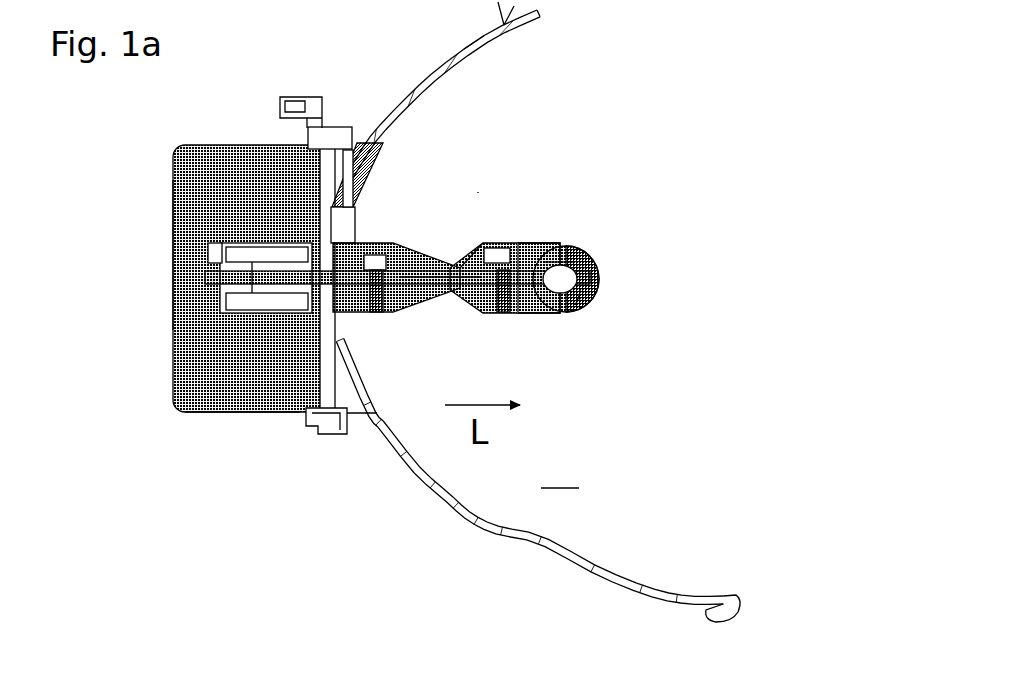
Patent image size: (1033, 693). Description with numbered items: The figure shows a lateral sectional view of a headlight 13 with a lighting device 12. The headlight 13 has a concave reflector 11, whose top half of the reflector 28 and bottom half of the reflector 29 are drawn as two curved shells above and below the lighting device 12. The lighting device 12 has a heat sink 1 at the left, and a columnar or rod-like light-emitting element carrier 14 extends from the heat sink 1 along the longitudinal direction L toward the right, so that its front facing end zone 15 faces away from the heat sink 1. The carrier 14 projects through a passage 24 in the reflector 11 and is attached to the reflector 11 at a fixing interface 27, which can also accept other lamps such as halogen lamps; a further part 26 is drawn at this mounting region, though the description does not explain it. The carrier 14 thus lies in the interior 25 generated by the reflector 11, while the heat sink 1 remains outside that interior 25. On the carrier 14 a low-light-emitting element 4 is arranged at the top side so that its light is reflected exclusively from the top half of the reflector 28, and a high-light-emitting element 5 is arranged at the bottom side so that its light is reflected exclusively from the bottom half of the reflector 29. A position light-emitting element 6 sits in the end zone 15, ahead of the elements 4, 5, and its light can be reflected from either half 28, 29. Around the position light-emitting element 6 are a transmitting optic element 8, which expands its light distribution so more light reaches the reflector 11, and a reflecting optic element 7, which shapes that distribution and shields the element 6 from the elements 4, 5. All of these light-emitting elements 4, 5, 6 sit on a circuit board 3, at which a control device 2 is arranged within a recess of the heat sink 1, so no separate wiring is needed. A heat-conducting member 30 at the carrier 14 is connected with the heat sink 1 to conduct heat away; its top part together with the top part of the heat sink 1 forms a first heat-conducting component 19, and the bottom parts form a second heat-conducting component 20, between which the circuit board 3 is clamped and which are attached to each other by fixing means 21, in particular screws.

The heat sink 1 is at (197, 150).
The control device 2 is at (232, 303).
The circuit board 3 is at (520, 292).
The low-light-emitting element 4 is at (446, 270).
The high-light-emitting element 5 is at (440, 286).
The position light-emitting element 6 is at (566, 279).
The reflecting optic element 7 is at (556, 264).
The transmitting optic element 8 is at (582, 292).
The reflector 11 is at (420, 73).
The lighting device 12 is at (645, 271).
The headlight 13 is at (710, 140).
The light-emitting element carrier 14 is at (478, 192).
The end zone 15 is at (574, 322).
The first heat-conducting component 19 is at (186, 213).
The second heat-conducting component 20 is at (198, 397).
The fixing means 21 is at (376, 292).
The passage 24 is at (358, 241).
The interior 25 is at (559, 470).
The flange plate 26 is at (328, 128).
The fixing interface 27 is at (280, 97).
The top half of the reflector 28 is at (474, 79).
The bottom half of the reflector 29 is at (614, 552).
The heat-conducting member 30 is at (535, 245).